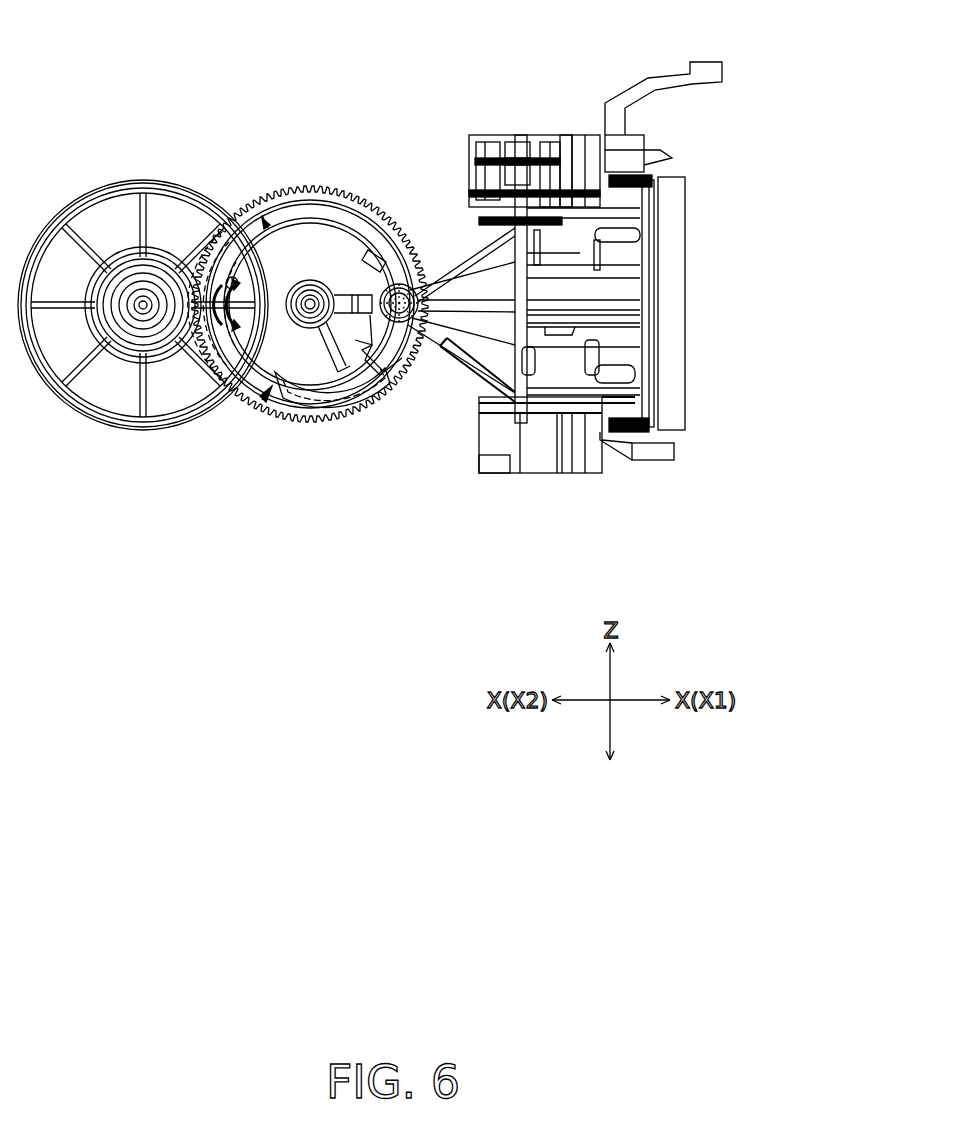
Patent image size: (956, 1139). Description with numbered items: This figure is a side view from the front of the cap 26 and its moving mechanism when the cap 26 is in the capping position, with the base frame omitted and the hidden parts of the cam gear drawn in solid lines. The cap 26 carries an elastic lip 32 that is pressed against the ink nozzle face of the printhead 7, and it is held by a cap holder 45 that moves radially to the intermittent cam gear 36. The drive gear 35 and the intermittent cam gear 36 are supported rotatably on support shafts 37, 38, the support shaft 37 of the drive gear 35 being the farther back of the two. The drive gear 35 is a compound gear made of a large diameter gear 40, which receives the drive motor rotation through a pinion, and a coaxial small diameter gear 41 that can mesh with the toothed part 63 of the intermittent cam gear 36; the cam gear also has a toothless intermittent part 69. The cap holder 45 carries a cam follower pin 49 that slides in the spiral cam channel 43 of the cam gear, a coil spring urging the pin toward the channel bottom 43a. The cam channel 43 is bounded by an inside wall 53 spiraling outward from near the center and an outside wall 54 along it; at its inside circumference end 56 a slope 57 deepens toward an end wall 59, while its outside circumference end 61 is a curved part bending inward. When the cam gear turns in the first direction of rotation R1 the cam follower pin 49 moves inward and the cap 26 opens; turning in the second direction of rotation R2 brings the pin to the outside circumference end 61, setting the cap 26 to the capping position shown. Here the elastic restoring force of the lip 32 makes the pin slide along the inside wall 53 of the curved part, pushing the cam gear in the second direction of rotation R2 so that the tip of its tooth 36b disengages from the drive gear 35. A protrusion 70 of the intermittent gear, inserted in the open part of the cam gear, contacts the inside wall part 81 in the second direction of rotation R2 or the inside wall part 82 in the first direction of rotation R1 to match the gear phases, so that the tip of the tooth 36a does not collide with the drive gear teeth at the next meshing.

The drive gear 35 is at (130, 119).
The large diameter gear 40 is at (68, 205).
The small diameter gear 41 is at (115, 256).
The intermittent part 69 is at (172, 262).
The support shaft 37 is at (80, 405).
The intermittent cam gear 36 is at (232, 418).
The tooth 36a is at (198, 250).
The tooth 36b is at (130, 375).
The first direction of rotation R1 is at (172, 378).
The second direction of rotation R2 is at (230, 420).
The cam channel 43 is at (243, 207).
The bottom 43a is at (300, 230).
The toothed part 63 is at (345, 195).
The end wall 59 is at (335, 252).
The outside wall 54 is at (358, 233).
The inside wall 53 is at (395, 262).
The outside circumference end 61 is at (410, 283).
The support shaft 38 is at (296, 410).
The slope 57 is at (343, 400).
The protrusion 70 is at (315, 426).
The inside wall part 82 is at (262, 430).
The inside circumference end 56 is at (365, 395).
The cam follower pin 49 is at (425, 345).
The inside wall part 81 is at (398, 378).
The lip 32 is at (655, 320).
The printhead 7 is at (678, 212).
The cap holder 45 is at (580, 128).
The cap 26 is at (666, 392).